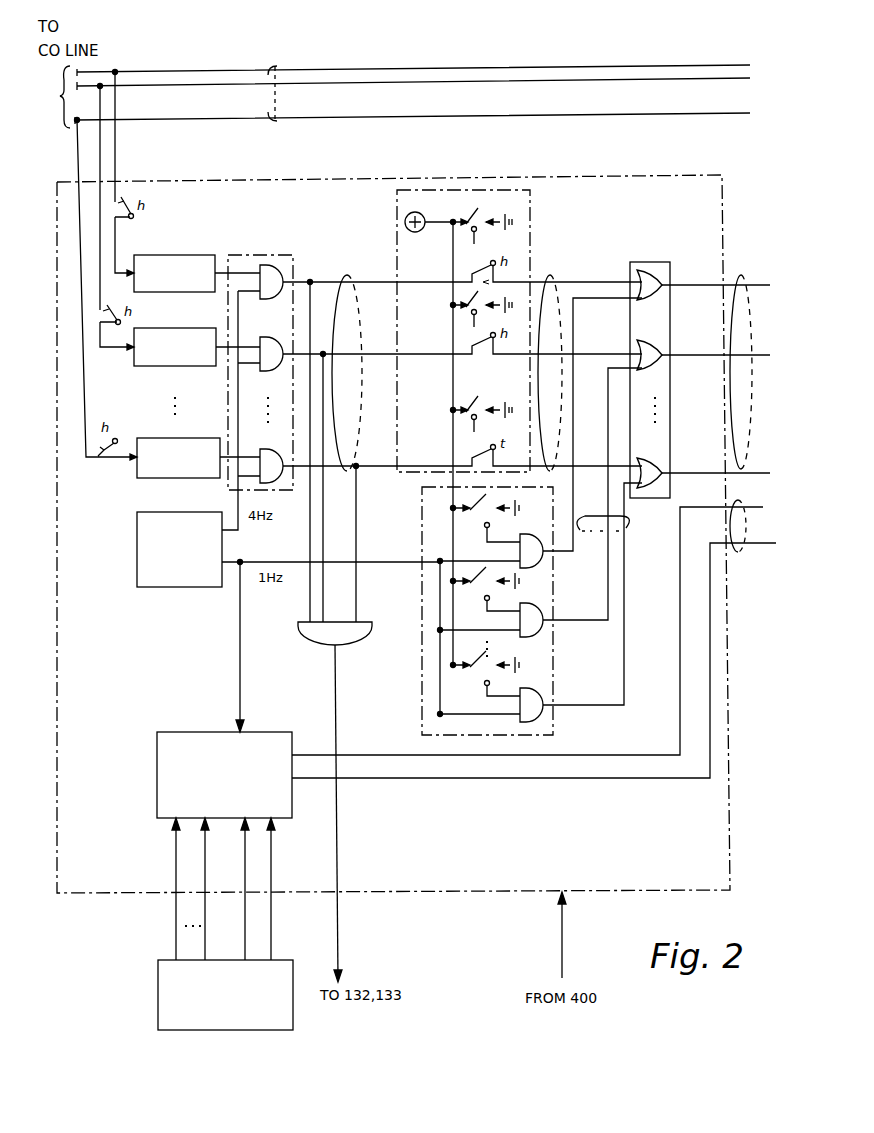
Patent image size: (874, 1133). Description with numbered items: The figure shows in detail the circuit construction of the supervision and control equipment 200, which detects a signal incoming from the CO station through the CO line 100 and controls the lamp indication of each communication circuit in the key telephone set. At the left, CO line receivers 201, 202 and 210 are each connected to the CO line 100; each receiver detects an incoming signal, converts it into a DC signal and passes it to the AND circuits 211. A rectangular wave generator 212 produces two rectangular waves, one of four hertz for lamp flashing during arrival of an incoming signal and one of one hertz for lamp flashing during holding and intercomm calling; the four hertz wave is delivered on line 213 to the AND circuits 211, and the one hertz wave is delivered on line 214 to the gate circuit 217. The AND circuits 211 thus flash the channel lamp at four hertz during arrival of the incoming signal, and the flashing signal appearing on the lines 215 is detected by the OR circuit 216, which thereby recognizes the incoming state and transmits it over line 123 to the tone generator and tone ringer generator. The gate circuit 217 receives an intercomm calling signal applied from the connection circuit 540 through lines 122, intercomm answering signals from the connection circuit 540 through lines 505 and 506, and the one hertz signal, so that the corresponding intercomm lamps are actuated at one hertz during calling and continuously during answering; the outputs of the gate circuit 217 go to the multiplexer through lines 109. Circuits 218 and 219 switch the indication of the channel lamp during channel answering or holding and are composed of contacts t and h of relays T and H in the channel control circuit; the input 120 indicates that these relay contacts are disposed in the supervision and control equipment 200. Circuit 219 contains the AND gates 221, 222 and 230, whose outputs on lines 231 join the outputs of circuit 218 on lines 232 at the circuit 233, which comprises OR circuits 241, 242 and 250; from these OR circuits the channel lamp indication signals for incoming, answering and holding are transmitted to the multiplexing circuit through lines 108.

The CO line 100 is at (272, 68).
The supervision and control equipment 200 is at (614, 175).
The CO line receiver 201 is at (178, 254).
The CO line receiver 202 is at (178, 328).
The CO line receiver 210 is at (180, 438).
The AND circuits 211 is at (278, 254).
The rectangular wave generator 212 is at (180, 510).
The 4 Hz output line 213 is at (245, 420).
The 1 Hz output line 214 is at (239, 642).
The lines 215 is at (345, 276).
The OR circuit 216 is at (312, 646).
The gate circuit 217 is at (176, 731).
The circuit for switching channel lamp indication 218 is at (531, 222).
The circuit for switching channel lamp indication 219 is at (420, 650).
The AND gate 221 is at (532, 538).
The AND gate 222 is at (532, 610).
The AND gate 230 is at (532, 686).
The signal lines 231 is at (626, 530).
The signal lines 232 is at (548, 276).
The OR circuit group 233 is at (652, 262).
The OR circuit 241 is at (662, 272).
The OR gate 242 is at (662, 346).
The OR circuit 250 is at (664, 464).
The lines 108 is at (740, 278).
The lines 109 is at (738, 552).
The input 120 is at (563, 944).
The lines 122 is at (205, 922).
The line 123 is at (341, 924).
The line 505 is at (245, 936).
The line 506 is at (271, 936).
The connection circuit 540 is at (153, 996).